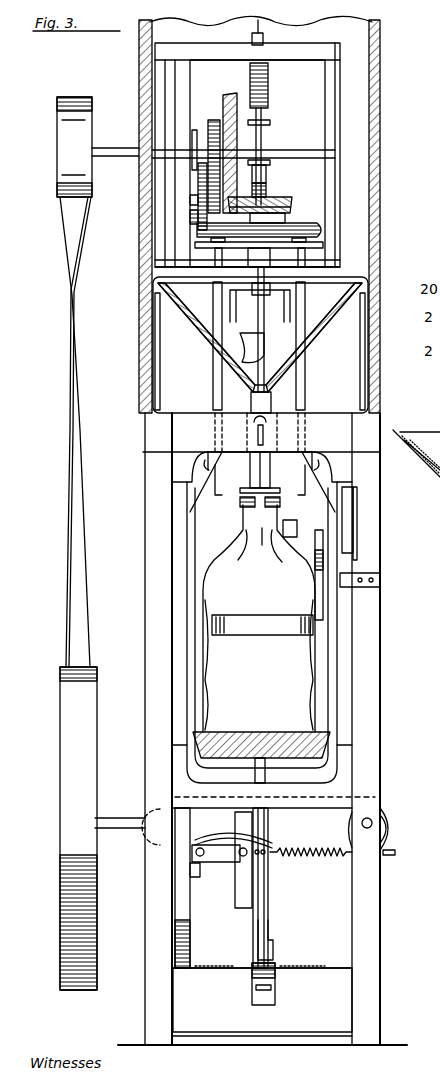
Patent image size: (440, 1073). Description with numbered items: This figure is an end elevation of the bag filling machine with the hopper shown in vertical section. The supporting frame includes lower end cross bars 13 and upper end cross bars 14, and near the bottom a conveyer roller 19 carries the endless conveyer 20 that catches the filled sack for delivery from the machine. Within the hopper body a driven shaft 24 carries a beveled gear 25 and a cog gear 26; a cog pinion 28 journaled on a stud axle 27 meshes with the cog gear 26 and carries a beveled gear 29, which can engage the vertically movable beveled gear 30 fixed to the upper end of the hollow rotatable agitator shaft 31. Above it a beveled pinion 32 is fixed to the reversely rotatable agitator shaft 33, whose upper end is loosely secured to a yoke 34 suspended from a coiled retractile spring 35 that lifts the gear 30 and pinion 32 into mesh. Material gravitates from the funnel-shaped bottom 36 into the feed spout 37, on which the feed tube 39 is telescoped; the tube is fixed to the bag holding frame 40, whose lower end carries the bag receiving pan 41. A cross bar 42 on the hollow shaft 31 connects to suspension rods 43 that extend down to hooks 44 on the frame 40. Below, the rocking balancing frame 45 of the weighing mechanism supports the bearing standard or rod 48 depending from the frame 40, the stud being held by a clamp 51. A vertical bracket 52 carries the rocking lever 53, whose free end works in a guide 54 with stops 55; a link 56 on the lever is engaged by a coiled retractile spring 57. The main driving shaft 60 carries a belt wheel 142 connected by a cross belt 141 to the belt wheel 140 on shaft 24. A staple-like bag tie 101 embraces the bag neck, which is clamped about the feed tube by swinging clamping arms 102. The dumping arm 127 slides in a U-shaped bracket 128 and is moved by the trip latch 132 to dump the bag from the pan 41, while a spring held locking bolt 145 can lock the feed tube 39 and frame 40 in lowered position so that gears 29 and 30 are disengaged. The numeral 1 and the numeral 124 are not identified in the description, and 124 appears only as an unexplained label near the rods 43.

The pin 1 is at (373, 822).
The lower end cross bar 13 is at (334, 995).
The upper end cross bar 14 is at (165, 437).
The conveyer roller 19 is at (392, 832).
The endless conveyer 20 is at (388, 806).
The driven shaft 24 is at (312, 148).
The beveled gear 25 is at (233, 94).
The cog gear 26 is at (213, 118).
The stud axle 27 is at (197, 200).
The cog pinion 28 is at (198, 218).
The beveled gear 29 is at (197, 178).
The vertically movable beveled gear 30 is at (318, 232).
The hollow rotatable agitator shaft 31 is at (268, 258).
The beveled pinion 32 is at (292, 210).
The reversely rotatable agitator shaft 33 is at (258, 318).
The yoke 34 is at (264, 133).
The coiled retractile spring 35 is at (270, 84).
The funnel-shaped bottom 36 is at (343, 325).
The feed spout 37 is at (270, 405).
The feed tube 39 is at (250, 485).
The bag holding frame 40 is at (338, 648).
The bag receiving pan 41 is at (257, 730).
The cross bar 42 is at (325, 245).
The suspension rods 43 is at (213, 375).
The hooks 44 is at (312, 453).
The rocking balancing frame 45 is at (321, 962).
The bearing standard or rod 48 is at (266, 900).
The clamp 51 is at (275, 946).
The vertical bracket 52 is at (247, 881).
The rocking lever 53 is at (222, 862).
The guide 54 is at (185, 912).
The stops 55 is at (190, 865).
The link 56 is at (272, 845).
The coiled retractile spring 57 is at (338, 860).
The main driving shaft 60 is at (118, 816).
The staple-like bag tie 101 is at (259, 618).
The swinging clamping arms 102 is at (197, 510).
The arm 124 is at (322, 478).
The dumping arm 127 is at (212, 622).
The U-shaped bracket 128 is at (327, 490).
The trip latch 132 is at (352, 550).
The belt wheel 140 is at (58, 183).
The cross belt 141 is at (67, 224).
The belt wheel 142 is at (98, 686).
The spring held locking bolt 145 is at (245, 437).